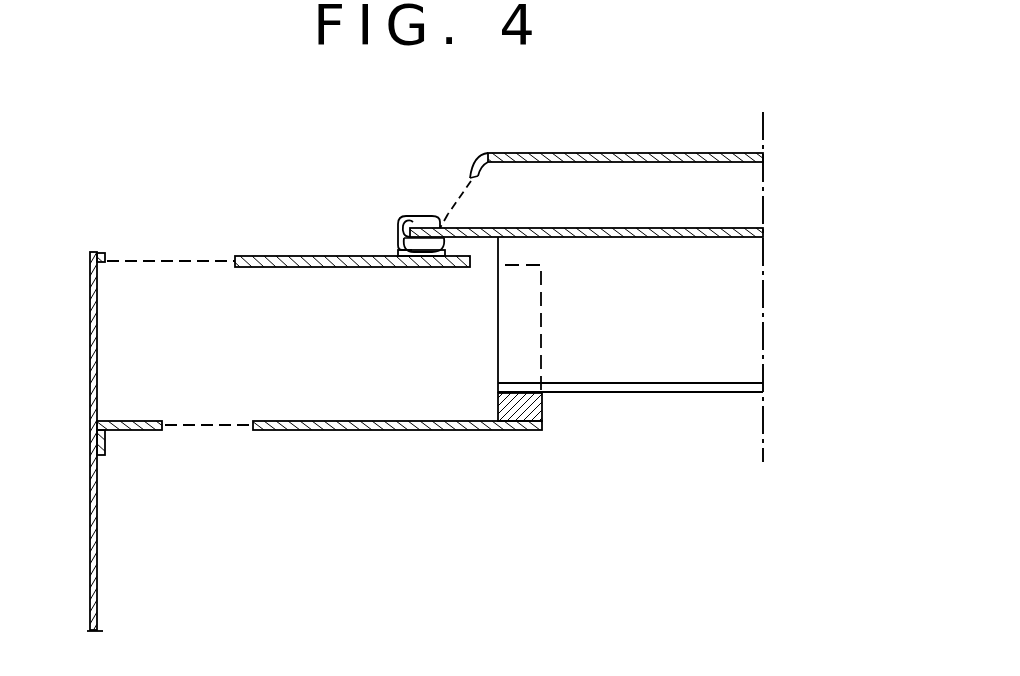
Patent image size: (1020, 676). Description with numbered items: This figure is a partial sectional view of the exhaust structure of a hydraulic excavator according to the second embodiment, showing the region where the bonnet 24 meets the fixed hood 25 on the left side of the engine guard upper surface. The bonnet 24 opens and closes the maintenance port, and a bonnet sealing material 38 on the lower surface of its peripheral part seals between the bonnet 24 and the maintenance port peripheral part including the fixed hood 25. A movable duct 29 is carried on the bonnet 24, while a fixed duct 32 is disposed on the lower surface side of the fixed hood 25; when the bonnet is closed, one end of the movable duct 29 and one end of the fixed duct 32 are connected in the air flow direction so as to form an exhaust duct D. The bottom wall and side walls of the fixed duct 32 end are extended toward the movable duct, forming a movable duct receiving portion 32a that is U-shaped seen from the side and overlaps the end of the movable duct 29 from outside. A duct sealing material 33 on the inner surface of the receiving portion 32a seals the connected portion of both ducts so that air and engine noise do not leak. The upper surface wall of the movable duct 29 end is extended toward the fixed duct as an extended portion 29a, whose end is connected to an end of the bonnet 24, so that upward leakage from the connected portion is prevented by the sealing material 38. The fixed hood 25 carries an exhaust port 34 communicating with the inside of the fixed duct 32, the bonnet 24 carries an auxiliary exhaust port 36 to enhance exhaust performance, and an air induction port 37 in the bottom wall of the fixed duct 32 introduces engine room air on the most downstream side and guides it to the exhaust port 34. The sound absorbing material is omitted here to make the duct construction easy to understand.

The bonnet 24 is at (731, 152).
The fixed hood 25 is at (282, 255).
The movable duct 29 is at (650, 228).
The extended portion 29a is at (496, 228).
The fixed duct 32 is at (320, 431).
The movable duct receiving portion 32a is at (545, 355).
The duct sealing material 33 is at (515, 432).
The exhaust port 34 is at (144, 255).
The auxiliary exhaust port 36 is at (455, 205).
The air induction port 37 is at (209, 433).
The bonnet sealing material 38 is at (402, 240).
The exhaust duct D is at (571, 228).